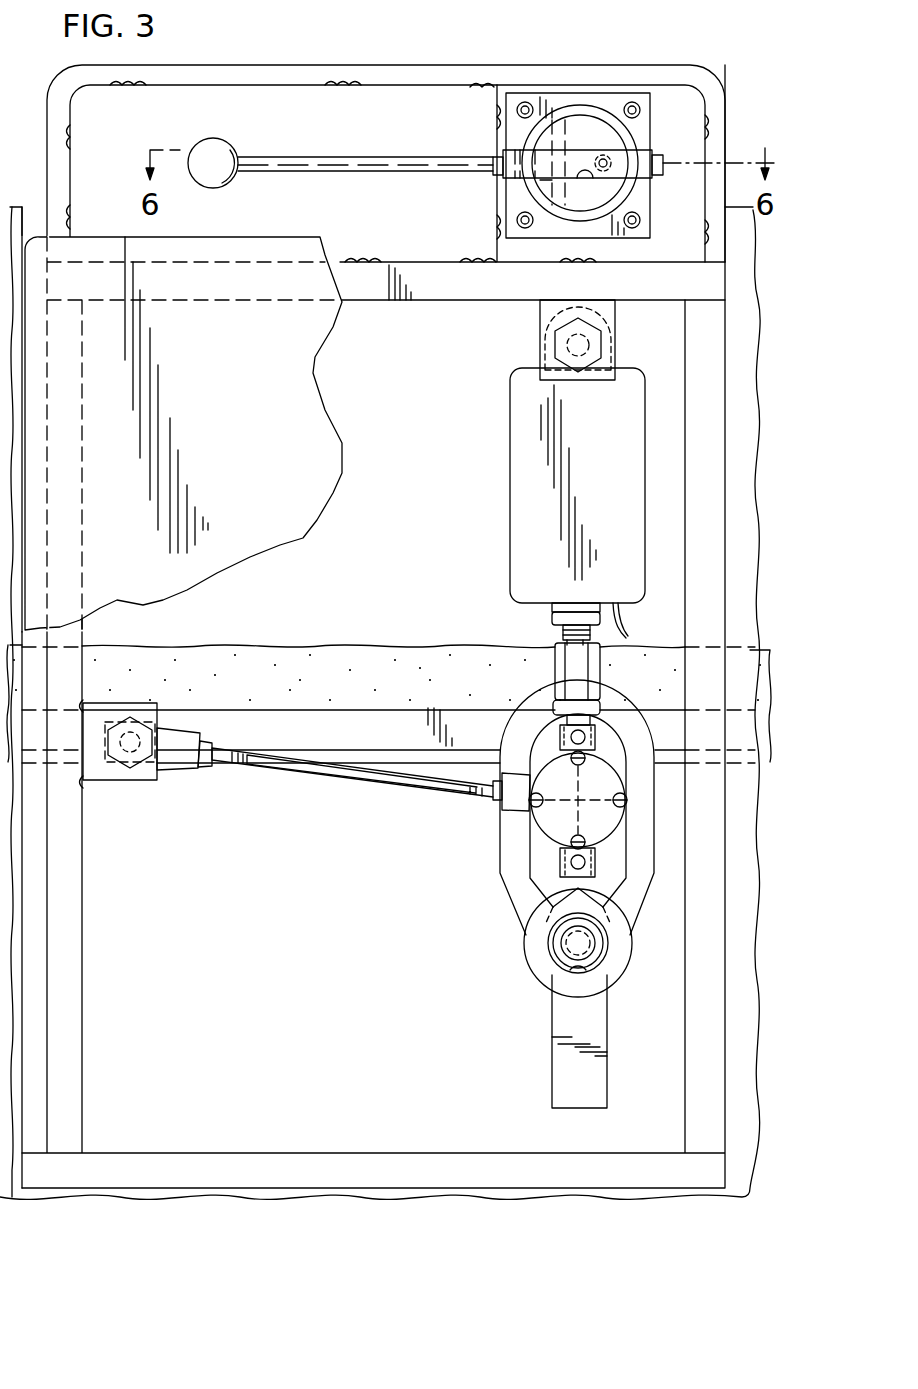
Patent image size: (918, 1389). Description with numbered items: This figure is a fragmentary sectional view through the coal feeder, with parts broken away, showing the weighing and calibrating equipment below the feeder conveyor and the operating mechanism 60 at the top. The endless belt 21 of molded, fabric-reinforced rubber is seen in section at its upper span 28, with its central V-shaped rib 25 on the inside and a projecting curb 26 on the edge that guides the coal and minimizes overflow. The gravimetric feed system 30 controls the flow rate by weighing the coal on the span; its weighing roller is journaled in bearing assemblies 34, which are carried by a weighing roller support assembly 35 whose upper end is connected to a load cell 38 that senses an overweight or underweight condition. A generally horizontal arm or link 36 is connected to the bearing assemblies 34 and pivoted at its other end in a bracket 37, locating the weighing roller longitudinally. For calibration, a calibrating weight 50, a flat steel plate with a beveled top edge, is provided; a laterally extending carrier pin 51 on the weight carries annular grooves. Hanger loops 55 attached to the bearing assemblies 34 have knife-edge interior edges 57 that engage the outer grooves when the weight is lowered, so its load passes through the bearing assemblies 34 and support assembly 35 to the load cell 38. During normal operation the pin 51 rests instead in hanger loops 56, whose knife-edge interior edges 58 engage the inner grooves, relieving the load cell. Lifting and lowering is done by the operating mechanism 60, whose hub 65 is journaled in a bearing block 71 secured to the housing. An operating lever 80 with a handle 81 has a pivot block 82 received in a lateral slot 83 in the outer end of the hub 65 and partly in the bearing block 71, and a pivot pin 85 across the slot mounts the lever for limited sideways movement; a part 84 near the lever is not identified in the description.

The endless belt 21 is at (346, 752).
The central V-shaped rib 25 is at (439, 758).
The projecting curb 26 is at (345, 715).
The upper span 28 is at (393, 745).
The gravimetric feed system 30 is at (430, 864).
The bearing assemblies 34 is at (607, 820).
The weighing roller support assemblies 35 is at (552, 665).
The arm or link 36 is at (283, 765).
The bracket 37 is at (122, 775).
The load cell 38 is at (526, 500).
The calibrating weight 50 is at (563, 1067).
The carrier pin 51 is at (572, 950).
The hanger loops 55 is at (622, 932).
The hanger loops 56 is at (513, 870).
The interior edges 57 is at (583, 968).
The interior edges 58 is at (620, 850).
The operating mechanism 60 is at (492, 195).
The hub 65 is at (605, 185).
The bearing block 71 is at (640, 128).
The operating lever 80 is at (372, 112).
The handle 81 is at (216, 147).
The pivot block 82 is at (578, 152).
The lateral slot 83 is at (587, 178).
The rod fitting 84 is at (494, 155).
The pivot pin 85 is at (557, 100).